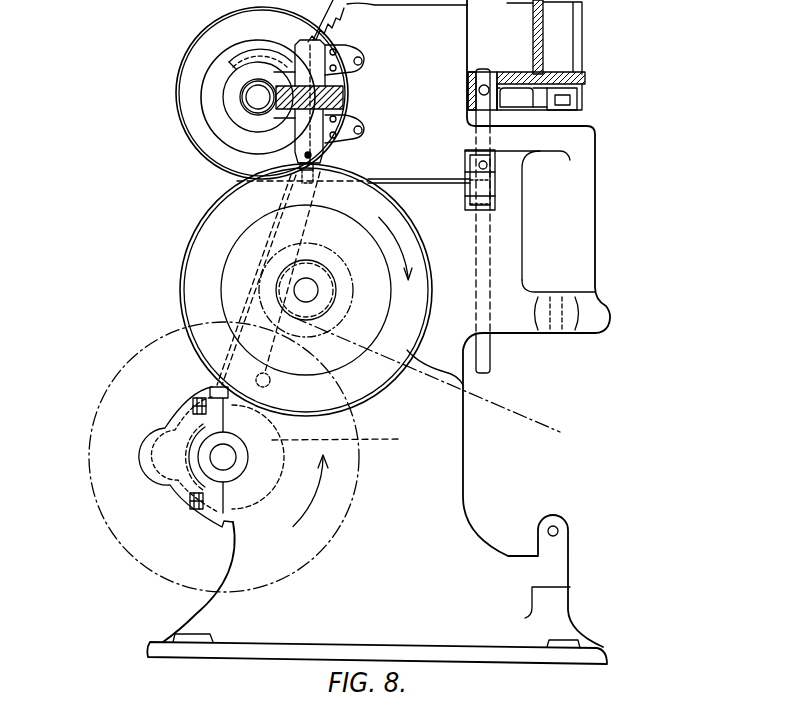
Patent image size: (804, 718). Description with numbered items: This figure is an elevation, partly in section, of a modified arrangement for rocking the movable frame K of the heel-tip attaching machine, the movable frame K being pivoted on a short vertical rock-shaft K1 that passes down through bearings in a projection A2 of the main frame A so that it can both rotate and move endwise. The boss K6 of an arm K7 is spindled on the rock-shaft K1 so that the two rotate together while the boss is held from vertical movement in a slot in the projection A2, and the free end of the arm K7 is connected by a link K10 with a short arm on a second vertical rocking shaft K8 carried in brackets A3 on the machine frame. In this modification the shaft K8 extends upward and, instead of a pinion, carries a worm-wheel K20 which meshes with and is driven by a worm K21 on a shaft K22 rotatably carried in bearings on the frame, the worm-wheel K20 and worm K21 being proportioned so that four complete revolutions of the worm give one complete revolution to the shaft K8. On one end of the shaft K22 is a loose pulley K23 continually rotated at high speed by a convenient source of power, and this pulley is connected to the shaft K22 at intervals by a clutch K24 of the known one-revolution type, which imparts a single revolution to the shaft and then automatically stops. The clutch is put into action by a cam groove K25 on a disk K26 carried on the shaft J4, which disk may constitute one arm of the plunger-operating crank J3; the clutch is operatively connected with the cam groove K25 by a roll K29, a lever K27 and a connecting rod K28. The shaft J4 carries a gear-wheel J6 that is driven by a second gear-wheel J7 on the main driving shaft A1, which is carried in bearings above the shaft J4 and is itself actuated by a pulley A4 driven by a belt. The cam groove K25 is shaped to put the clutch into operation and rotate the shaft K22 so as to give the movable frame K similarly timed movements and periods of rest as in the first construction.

The main frame A is at (470, 38).
The main driving shaft A1 is at (308, 288).
The projection from the main frame A2 is at (595, 238).
The brackets A3 is at (345, 52).
The pulley A4 is at (628, 282).
The movable frame K is at (570, 17).
The rock-shaft K1 is at (490, 118).
The boss K6 is at (495, 157).
The arm K7 is at (495, 188).
The second vertical rocking shaft K8 is at (340, 77).
The link K10 is at (495, 200).
The worm-wheel K20 is at (292, 110).
The worm K21 is at (288, 108).
The shaft K22 is at (243, 99).
The loose pulley K23 is at (187, 53).
The clutch K24 is at (245, 97).
The cam groove K25 is at (400, 439).
The disk K26 is at (178, 512).
The lever K27 is at (190, 342).
The connecting rod K28 is at (275, 230).
The roll K29 is at (193, 400).
The crank J3 is at (145, 447).
The shaft J4 is at (212, 458).
The gear-wheel J6 is at (355, 492).
The gear-wheel J7 is at (445, 385).